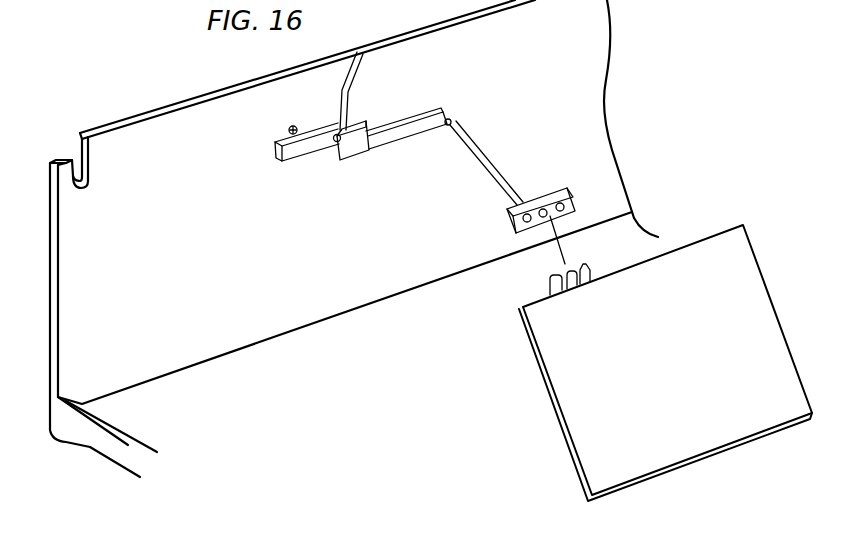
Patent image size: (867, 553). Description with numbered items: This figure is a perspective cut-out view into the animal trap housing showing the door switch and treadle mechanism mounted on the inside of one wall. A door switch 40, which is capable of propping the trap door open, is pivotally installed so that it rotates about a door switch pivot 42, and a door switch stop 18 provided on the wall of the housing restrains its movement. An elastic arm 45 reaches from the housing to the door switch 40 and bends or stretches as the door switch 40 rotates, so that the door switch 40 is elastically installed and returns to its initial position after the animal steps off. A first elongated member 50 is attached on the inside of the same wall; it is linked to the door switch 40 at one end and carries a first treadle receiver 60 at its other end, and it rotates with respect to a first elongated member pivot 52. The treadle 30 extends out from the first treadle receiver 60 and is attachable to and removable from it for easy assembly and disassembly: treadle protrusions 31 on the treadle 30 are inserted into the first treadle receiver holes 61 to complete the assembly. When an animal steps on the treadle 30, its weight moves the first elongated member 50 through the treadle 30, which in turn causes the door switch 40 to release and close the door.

The door switch stop 18 is at (288, 130).
The treadle 30 is at (687, 464).
The treadle protrusions 31 is at (593, 268).
The door switch 40 is at (295, 158).
The door switch pivot 42 is at (338, 148).
The elastic arm 45 is at (352, 82).
The first elongated member 50 is at (423, 134).
The first elongated member pivot 52 is at (455, 118).
The first treadle receiver 60 is at (558, 192).
The first treadle receiver holes 61 is at (510, 219).